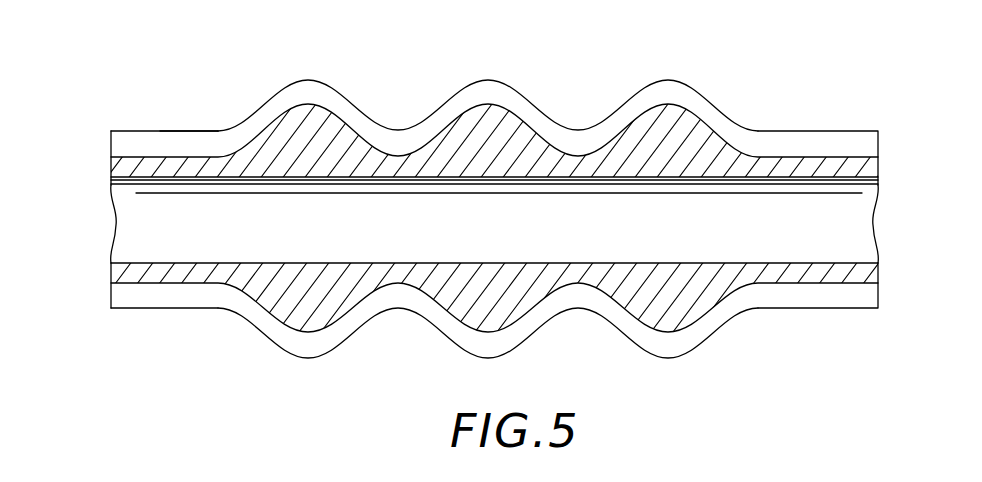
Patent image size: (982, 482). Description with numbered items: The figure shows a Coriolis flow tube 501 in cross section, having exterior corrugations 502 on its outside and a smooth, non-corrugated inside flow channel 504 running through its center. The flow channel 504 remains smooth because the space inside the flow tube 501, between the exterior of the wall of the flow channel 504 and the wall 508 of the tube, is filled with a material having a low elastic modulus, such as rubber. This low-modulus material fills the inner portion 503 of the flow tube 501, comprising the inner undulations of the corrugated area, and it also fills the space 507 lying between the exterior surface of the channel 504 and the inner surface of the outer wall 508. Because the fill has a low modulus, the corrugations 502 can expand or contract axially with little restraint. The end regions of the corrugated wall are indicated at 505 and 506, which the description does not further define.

The Coriolis flow tube 501 is at (379, 82).
The exterior corrugations 502 is at (658, 343).
The inner portion of flow tube 503 is at (520, 306).
The flow channel 504 is at (512, 233).
The left end portion of top sheet 505 is at (198, 145).
The right end portion of top sheet 506 is at (853, 138).
The space 507 is at (128, 165).
The inner wall portion / outer wall 508 is at (128, 147).